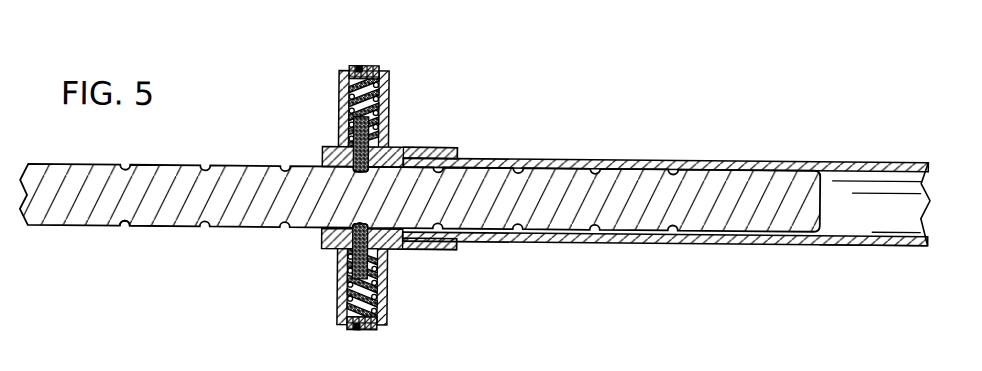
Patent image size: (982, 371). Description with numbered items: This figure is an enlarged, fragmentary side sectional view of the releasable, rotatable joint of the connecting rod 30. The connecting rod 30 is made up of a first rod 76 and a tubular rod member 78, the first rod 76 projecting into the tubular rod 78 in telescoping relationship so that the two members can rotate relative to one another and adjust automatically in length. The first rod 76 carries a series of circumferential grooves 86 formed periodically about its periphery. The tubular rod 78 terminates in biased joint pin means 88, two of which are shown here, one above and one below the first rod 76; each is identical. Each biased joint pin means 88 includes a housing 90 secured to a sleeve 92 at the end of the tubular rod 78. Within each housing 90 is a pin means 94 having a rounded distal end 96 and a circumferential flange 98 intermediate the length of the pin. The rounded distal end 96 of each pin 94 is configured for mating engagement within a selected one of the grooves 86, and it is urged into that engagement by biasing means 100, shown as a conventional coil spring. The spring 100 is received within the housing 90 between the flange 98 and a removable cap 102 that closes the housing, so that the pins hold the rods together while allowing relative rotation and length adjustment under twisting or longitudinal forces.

The connecting rod 30 is at (597, 157).
The first rod 76 is at (86, 230).
The tubular rod member 78 is at (840, 246).
The circumferential grooves 86 is at (125, 234).
The biased joint pin means 88 is at (400, 108).
The housing 90 is at (340, 88).
The sleeve 92 is at (423, 148).
The pin means 94 is at (322, 150).
The rounded distal end 96 is at (350, 224).
The circumferential flange 98 is at (352, 150).
The biasing means 100 is at (346, 110).
The removable cap 102 is at (362, 66).